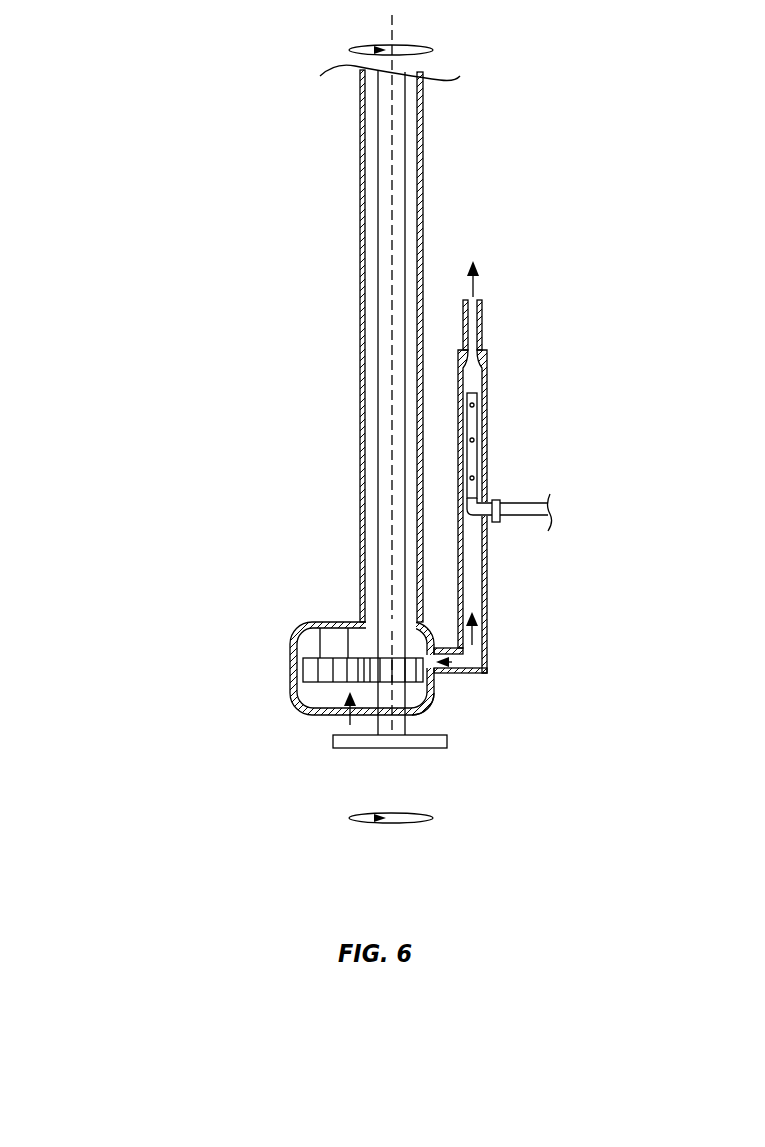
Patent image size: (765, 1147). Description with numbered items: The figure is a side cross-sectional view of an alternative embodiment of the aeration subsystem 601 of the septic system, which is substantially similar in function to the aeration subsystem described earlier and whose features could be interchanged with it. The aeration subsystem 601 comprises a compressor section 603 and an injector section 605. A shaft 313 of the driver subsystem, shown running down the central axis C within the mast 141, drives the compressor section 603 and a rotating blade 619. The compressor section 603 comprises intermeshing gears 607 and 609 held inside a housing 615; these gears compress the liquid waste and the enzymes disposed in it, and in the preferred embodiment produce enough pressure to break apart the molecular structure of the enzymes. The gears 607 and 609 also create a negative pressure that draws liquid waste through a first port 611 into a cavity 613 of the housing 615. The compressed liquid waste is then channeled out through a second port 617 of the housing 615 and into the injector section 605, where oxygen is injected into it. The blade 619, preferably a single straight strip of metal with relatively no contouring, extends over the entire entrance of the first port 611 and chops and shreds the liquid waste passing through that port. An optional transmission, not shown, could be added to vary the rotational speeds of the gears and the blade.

The central axis C is at (393, 33).
The mast 141 is at (360, 408).
The shaft 313 is at (378, 303).
The aeration subsystem 601 is at (140, 506).
The compressor section 603 is at (214, 744).
The injector section 605 is at (524, 469).
The intermeshing gear 607 is at (432, 668).
The intermeshing gear 609 is at (305, 675).
The first port 611 is at (340, 718).
The cavity 613 is at (428, 697).
The housing 615 is at (333, 622).
The second port 617 is at (486, 674).
The rotating blade 619 is at (417, 748).